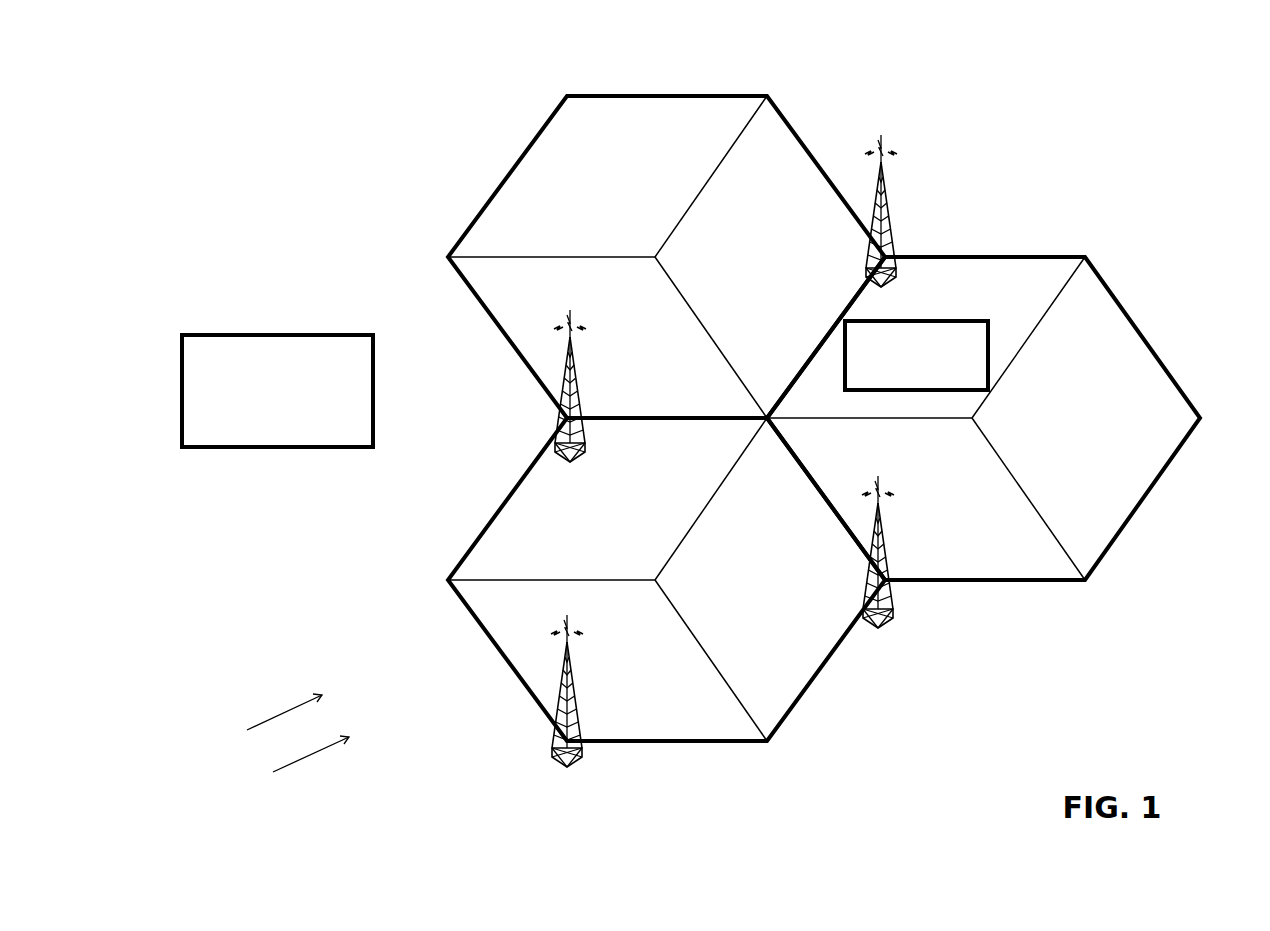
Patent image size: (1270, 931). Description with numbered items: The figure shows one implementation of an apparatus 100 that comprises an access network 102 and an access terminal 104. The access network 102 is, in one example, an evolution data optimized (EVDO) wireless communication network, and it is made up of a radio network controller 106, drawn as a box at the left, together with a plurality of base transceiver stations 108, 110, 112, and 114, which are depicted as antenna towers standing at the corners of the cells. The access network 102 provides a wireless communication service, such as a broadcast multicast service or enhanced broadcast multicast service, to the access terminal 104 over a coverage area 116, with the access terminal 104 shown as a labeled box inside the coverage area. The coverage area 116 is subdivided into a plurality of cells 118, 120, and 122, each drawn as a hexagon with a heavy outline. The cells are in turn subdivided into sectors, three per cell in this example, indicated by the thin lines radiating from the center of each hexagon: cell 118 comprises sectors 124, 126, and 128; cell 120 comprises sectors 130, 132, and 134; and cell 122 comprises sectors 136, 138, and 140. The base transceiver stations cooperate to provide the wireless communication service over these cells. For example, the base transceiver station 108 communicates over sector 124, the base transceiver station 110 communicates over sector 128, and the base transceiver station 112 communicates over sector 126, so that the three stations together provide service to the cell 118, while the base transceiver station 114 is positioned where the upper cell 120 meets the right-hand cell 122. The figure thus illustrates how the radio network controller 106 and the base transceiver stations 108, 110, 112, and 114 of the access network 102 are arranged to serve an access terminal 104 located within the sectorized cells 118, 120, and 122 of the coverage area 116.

The apparatus 100 is at (192, 656).
The access network 102 is at (288, 766).
The access terminal 104 is at (934, 318).
The radio network controller 106 is at (307, 448).
The base transceiver station 108 is at (567, 706).
The base transceiver station 110 is at (878, 566).
The base transceiver station 112 is at (568, 402).
The base transceiver station 114 is at (878, 225).
The coverage area 116 is at (260, 722).
The cell 118 is at (797, 700).
The cell 120 is at (782, 112).
The cell 122 is at (1125, 528).
The sector 124 is at (510, 615).
The sector 126 is at (538, 547).
The sector 128 is at (692, 563).
The sector 130 is at (508, 297).
The sector 132 is at (537, 193).
The sector 134 is at (737, 206).
The sector 136 is at (1042, 275).
The sector 138 is at (1095, 360).
The sector 140 is at (990, 490).